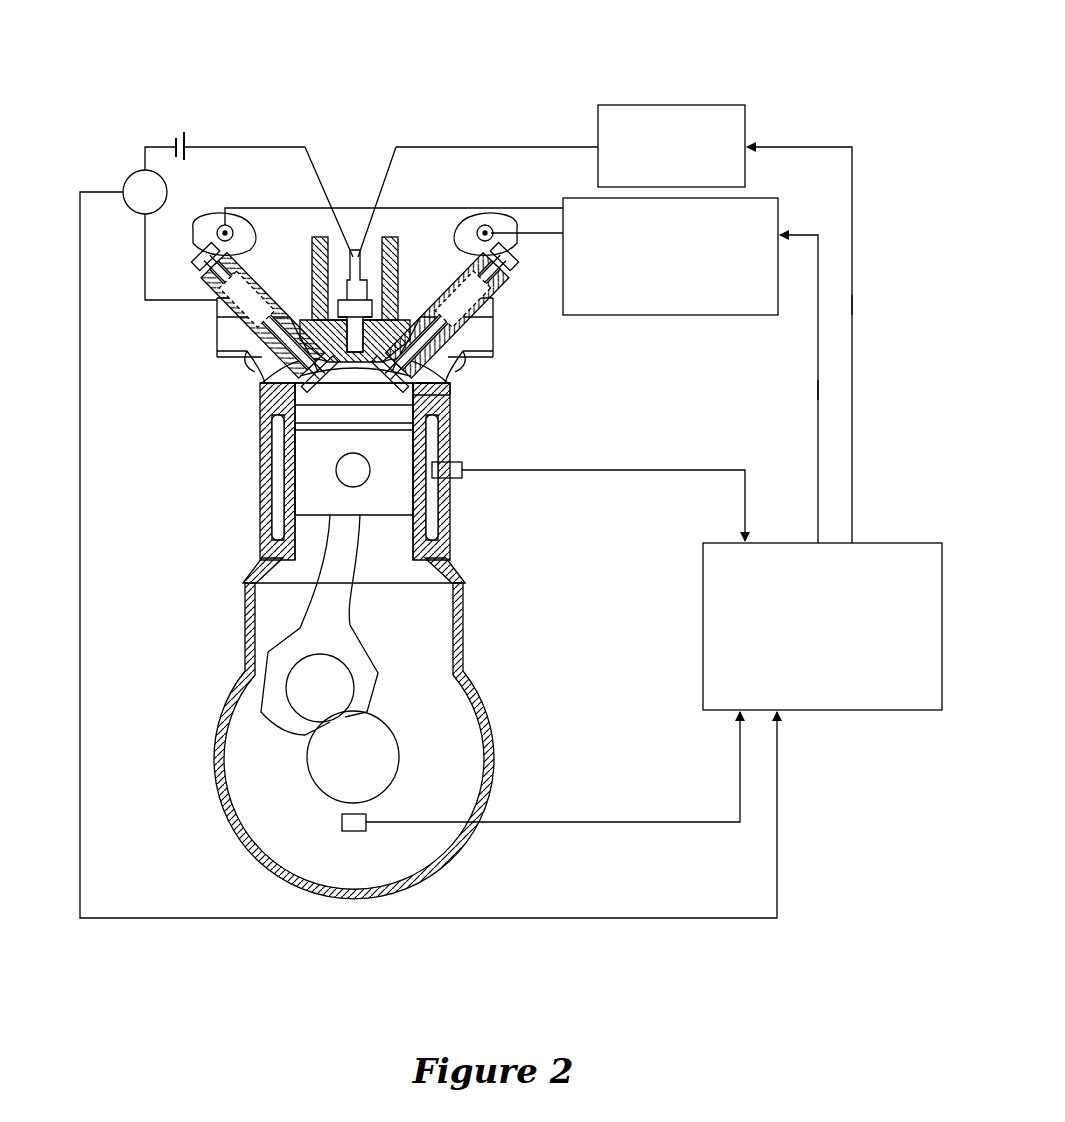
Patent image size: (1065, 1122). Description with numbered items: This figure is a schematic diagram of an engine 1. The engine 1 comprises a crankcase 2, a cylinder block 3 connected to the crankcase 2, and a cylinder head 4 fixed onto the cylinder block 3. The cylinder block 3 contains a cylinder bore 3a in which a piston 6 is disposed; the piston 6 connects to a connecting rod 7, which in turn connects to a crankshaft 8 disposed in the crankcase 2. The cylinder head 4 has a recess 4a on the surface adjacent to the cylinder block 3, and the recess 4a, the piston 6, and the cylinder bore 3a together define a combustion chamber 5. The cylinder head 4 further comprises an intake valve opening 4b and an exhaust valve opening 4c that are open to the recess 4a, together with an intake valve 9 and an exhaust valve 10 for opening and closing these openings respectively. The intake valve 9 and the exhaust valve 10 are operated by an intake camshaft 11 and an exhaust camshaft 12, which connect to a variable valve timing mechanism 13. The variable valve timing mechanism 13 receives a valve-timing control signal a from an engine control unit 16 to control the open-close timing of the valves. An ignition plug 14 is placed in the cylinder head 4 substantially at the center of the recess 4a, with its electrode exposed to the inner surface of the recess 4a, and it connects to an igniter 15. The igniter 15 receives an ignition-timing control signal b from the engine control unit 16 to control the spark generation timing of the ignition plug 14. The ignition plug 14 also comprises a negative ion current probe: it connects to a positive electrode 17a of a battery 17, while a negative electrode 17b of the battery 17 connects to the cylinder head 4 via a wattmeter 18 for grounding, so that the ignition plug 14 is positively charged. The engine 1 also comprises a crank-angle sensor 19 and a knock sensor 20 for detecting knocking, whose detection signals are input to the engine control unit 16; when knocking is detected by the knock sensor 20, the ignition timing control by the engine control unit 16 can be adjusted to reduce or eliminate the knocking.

The engine 1 is at (322, 108).
The crankcase 2 is at (213, 717).
The cylinder block 3 is at (256, 515).
The cylinder bore 3a is at (430, 540).
The cylinder head 4 is at (213, 360).
The recess 4a is at (356, 373).
The intake valve opening 4b is at (442, 395).
The exhaust valve opening 4c is at (326, 405).
The combustion chamber 5 is at (300, 456).
The piston 6 is at (312, 470).
The connecting rod 7 is at (300, 628).
The crankshaft 8 is at (310, 773).
The intake valve 9 is at (465, 362).
The exhaust valve 10 is at (262, 378).
The intake camshaft 11 is at (490, 226).
The exhaust camshaft 12 is at (228, 225).
The variable valve timing mechanism 13 is at (700, 315).
The ignition plug 14 is at (355, 250).
The igniter 15 is at (692, 105).
The engine control unit 16 is at (895, 543).
The battery 17 is at (180, 140).
The positive electrode 17a is at (190, 146).
The negative electrode 17b is at (175, 143).
The wattmeter 18 is at (125, 180).
The crank-angle sensor 19 is at (352, 832).
The knock sensor 20 is at (464, 480).
The valve-timing control signal a is at (820, 385).
The ignition-timing control signal b is at (853, 300).